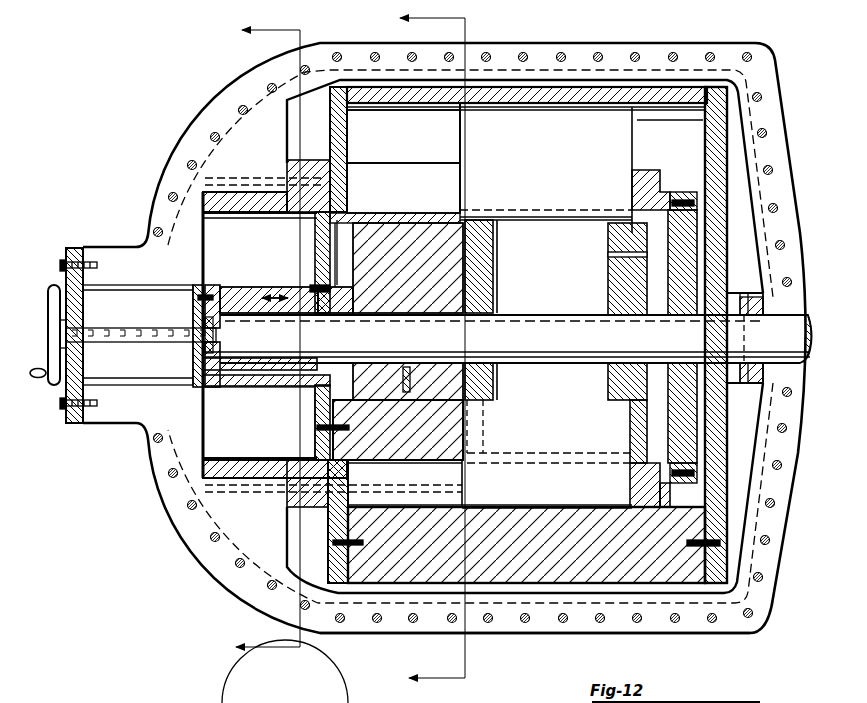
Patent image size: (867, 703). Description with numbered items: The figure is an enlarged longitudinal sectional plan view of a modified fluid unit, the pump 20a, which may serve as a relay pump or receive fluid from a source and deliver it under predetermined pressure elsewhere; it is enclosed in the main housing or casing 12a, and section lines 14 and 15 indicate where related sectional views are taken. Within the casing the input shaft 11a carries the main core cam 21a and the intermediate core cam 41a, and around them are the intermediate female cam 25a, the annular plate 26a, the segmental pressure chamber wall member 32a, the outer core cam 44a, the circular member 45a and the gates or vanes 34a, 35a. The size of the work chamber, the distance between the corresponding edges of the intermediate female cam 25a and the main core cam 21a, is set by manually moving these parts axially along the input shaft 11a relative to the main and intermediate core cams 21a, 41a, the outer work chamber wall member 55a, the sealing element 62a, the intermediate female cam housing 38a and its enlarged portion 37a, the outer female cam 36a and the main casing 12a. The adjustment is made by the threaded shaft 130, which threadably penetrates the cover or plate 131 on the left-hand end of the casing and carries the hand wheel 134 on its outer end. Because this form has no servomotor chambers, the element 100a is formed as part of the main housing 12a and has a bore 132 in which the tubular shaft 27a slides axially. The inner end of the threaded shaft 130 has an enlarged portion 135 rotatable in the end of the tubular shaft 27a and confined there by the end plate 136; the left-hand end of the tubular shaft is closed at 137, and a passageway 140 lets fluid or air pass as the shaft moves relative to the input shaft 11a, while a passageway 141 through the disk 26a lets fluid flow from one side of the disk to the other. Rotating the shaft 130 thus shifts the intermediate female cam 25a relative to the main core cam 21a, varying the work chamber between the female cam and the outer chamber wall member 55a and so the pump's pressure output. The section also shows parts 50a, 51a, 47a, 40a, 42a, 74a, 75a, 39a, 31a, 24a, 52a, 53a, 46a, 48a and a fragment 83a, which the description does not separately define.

The main housing or casing 12a is at (505, 42).
The pump 20a is at (514, 590).
The section line 14- 14 is at (445, 355).
The section line 15- 15 is at (280, 339).
The hand wheel 134 is at (52, 300).
The cover or plate 131 is at (84, 360).
The bore 132 is at (121, 380).
The threaded shaft 130 is at (122, 328).
The closed end of tubular shaft 137 is at (210, 336).
The end plate 136 is at (194, 300).
The passageway 140 is at (213, 288).
The enlarged portion 135 is at (198, 350).
The element of main housing 100a is at (204, 252).
The sleeve 50a is at (298, 387).
The tubular shaft 27a is at (255, 372).
The chamber 51a is at (222, 383).
The pin 47a is at (316, 318).
The intermediate female cam housing 38a is at (240, 197).
The housing side wall 40a is at (355, 163).
The end ring 42a is at (344, 124).
The passage 74a is at (405, 178).
The passage 75a is at (440, 486).
The outer female cam 36a is at (610, 98).
The housing end wall 39a is at (722, 148).
The intermediate female cam 25a is at (390, 198).
The annular plate 26a is at (316, 240).
The passageway 141 is at (316, 252).
The spacer 31a is at (338, 278).
The main core cam 21a is at (408, 311).
The key 24a is at (415, 366).
The sealing element 62a is at (468, 240).
The intermediate core cam 41a is at (498, 266).
The outer work chamber wall member 55a is at (500, 237).
The gate or vane 34a is at (546, 168).
The segmental pressure chamber wall member 32a is at (538, 210).
The gate or vane 35a is at (556, 426).
The enlarged portion of intermediate female cam housing 37a is at (645, 170).
The screw 52a is at (682, 197).
The outer core cam 44a is at (610, 235).
The washer 53a is at (618, 255).
The circular member 45a is at (632, 431).
The input shaft 11a is at (516, 338).
The keyway 46a is at (520, 322).
The bearing bracket 48a is at (646, 318).
The adjacent figure element 83a is at (285, 671).